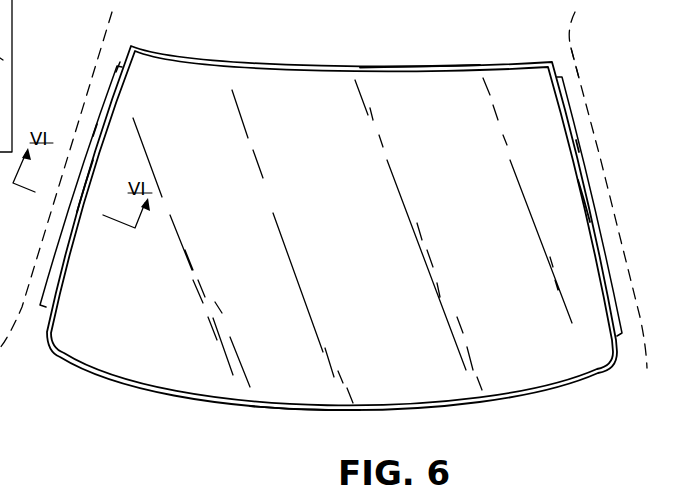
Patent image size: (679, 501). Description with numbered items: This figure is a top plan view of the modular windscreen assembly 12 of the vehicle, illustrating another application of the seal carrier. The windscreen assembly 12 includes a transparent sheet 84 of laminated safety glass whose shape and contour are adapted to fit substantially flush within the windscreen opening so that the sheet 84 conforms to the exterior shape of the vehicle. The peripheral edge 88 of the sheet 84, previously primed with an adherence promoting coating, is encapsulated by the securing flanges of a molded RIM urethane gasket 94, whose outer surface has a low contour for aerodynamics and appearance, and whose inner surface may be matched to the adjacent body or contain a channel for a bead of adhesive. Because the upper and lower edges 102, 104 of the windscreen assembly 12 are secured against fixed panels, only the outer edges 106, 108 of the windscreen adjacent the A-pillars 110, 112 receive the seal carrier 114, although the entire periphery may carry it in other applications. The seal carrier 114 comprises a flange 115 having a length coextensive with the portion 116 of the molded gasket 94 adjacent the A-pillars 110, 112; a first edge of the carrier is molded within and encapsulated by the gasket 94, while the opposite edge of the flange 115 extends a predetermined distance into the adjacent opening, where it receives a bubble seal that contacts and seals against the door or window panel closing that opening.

The windscreen assembly 12 is at (598, 45).
The transparent sheet 84 is at (368, 190).
The peripheral edge 88 is at (252, 62).
The molded RIM urethane gasket 94 is at (398, 58).
The upper edge 102 is at (320, 64).
The lower edge 104 is at (303, 412).
The outer edge 106 is at (85, 185).
The outer edge 108 is at (583, 200).
The A-pillar 110 is at (112, 17).
The A-pillar 112 is at (574, 58).
The seal carrier 114 is at (58, 224).
The flange 115 is at (95, 128).
The portion of molded gasket 116 is at (116, 110).